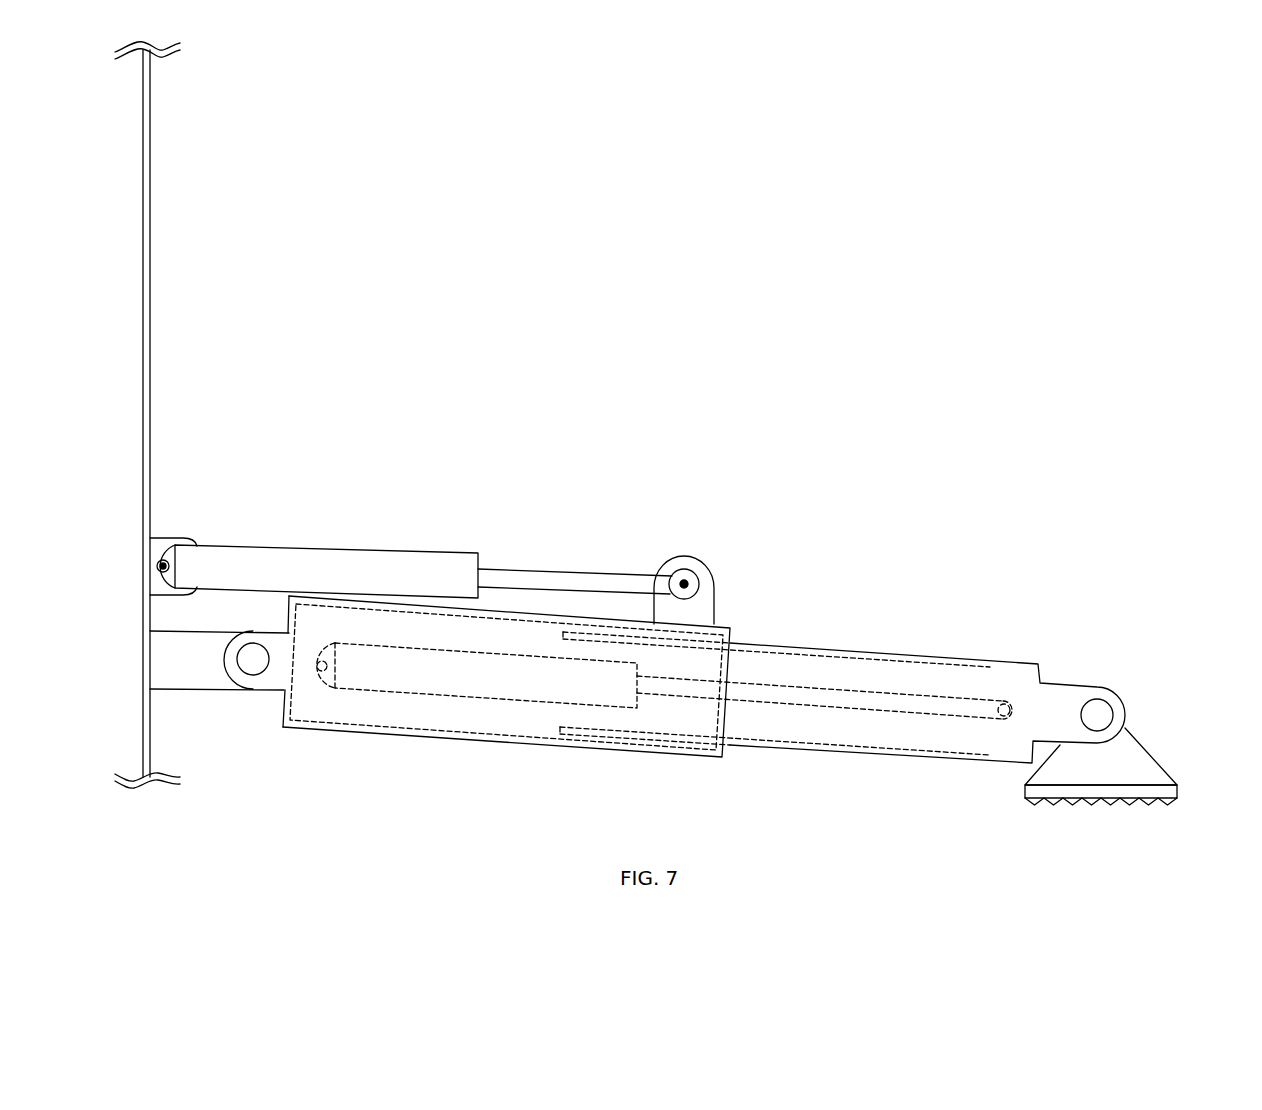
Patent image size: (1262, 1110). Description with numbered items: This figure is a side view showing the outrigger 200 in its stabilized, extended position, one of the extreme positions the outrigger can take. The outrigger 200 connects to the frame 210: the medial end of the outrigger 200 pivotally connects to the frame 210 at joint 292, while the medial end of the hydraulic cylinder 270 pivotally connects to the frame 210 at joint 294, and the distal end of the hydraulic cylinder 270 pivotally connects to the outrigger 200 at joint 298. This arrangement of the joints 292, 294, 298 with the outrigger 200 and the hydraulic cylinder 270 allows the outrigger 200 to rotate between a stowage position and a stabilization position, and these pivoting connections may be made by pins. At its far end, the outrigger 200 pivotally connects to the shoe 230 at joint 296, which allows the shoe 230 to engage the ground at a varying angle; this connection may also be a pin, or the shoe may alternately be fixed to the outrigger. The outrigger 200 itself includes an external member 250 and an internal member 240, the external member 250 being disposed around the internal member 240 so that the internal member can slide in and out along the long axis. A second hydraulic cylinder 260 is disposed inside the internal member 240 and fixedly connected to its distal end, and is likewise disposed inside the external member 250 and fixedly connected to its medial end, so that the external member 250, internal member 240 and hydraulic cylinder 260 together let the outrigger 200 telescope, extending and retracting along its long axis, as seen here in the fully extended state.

The outrigger 200 is at (723, 332).
The frame 210 is at (148, 785).
The shoe 230 is at (1125, 768).
The internal member 240 is at (887, 652).
The external member 250 is at (410, 737).
The hydraulic cylinder 260 is at (505, 677).
The hydraulic cylinder 270 is at (340, 575).
The joint 292 is at (253, 660).
The joint 294 is at (163, 566).
The joint 296 is at (1097, 717).
The joint 298 is at (686, 582).